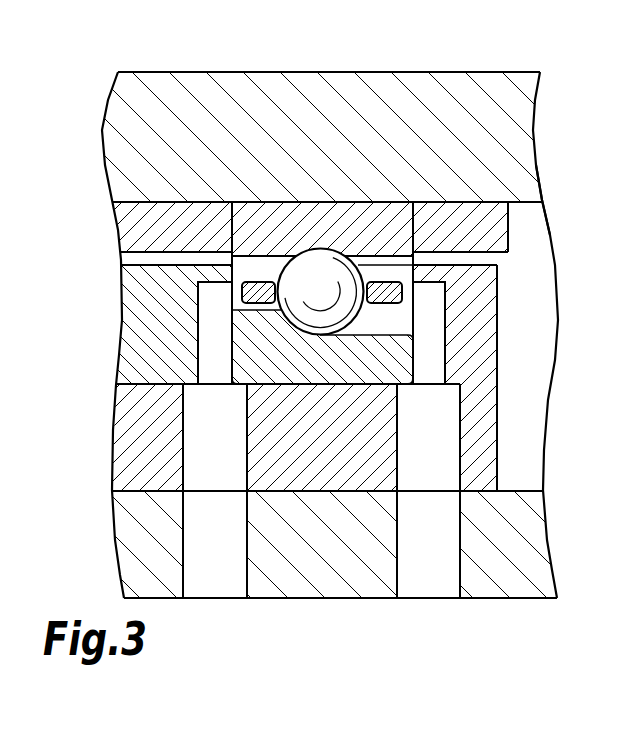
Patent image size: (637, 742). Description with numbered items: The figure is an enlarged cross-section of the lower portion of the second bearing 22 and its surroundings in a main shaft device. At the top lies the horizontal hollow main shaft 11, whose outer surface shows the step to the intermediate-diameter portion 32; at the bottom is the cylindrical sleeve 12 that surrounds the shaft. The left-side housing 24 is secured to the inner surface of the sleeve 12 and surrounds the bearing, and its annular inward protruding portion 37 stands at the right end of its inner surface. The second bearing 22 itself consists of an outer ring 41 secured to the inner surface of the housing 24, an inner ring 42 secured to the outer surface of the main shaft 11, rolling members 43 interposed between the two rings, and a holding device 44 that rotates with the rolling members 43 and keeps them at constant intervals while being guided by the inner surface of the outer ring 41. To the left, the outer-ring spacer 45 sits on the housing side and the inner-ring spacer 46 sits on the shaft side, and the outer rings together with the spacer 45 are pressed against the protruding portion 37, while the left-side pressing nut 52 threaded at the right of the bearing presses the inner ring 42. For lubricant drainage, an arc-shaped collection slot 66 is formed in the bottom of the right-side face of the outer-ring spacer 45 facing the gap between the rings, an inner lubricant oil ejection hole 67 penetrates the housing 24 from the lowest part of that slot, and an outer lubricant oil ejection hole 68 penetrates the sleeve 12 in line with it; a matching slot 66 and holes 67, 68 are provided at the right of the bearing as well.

The main shaft 11 is at (103, 130).
The sleeve 12 is at (545, 583).
The second bearing 22 is at (335, 200).
The left-side housing 24 is at (493, 408).
The intermediate-diameter portion 32 is at (528, 204).
The left-side annular-shaped inward protruding portion 37 is at (488, 320).
The outer ring 41 is at (318, 388).
The inner ring 42 is at (383, 217).
The rolling member 43 is at (318, 262).
The holding device 44 is at (242, 290).
The outer-ring spacer 45 is at (127, 320).
The inner-ring spacer 46 is at (122, 231).
The left-side pressing nut 52 is at (497, 239).
The collection slot 66 is at (205, 362).
The inner lubricant oil ejection hole 67 is at (192, 448).
The outer lubricant oil ejection hole 68 is at (192, 551).